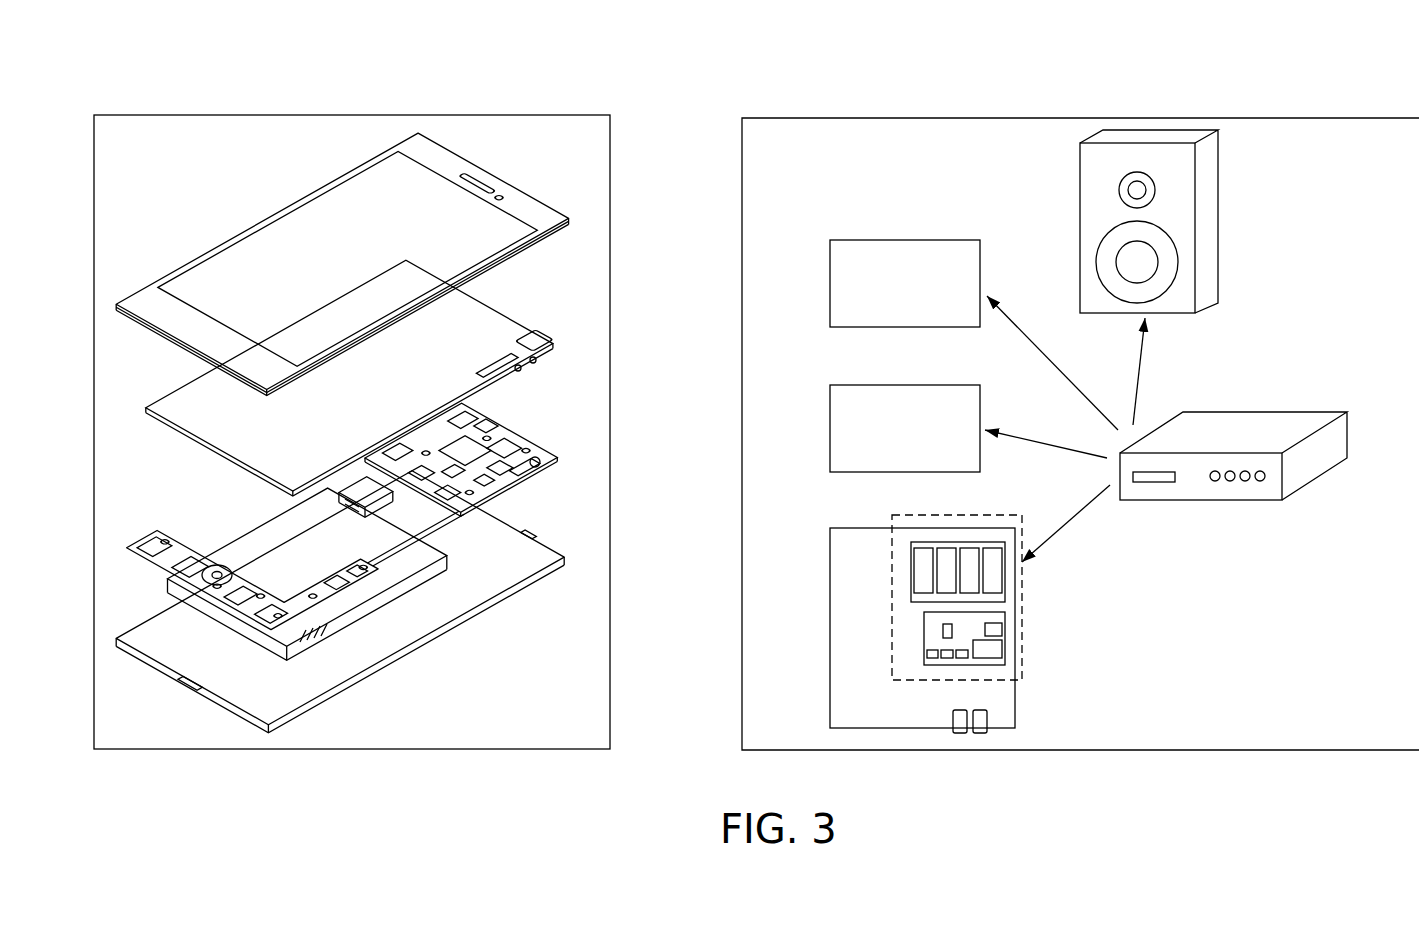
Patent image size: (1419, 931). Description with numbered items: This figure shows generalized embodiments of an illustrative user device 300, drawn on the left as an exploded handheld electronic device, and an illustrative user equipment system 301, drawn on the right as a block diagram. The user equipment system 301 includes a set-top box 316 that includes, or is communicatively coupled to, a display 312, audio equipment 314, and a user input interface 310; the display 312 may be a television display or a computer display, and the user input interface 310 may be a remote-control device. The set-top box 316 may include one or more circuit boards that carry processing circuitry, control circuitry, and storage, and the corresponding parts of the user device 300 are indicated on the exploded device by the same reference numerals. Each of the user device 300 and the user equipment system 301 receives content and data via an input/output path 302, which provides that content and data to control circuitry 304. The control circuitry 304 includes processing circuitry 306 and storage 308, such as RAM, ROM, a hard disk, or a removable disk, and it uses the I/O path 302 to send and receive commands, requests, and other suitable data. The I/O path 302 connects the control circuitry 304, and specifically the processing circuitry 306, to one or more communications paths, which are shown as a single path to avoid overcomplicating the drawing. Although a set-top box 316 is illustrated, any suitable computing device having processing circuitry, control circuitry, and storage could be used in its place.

The user device 300 is at (197, 62).
The user equipment system 301 is at (1290, 76).
The I/O path 302 is at (205, 588).
The control circuitry 304 is at (888, 645).
The processing circuitry 306 is at (920, 622).
The storage 308 is at (907, 568).
The user input interface 310 is at (828, 282).
The display 312 is at (828, 388).
The audio equipment 314 is at (1078, 225).
The set-top box 316 is at (1225, 412).